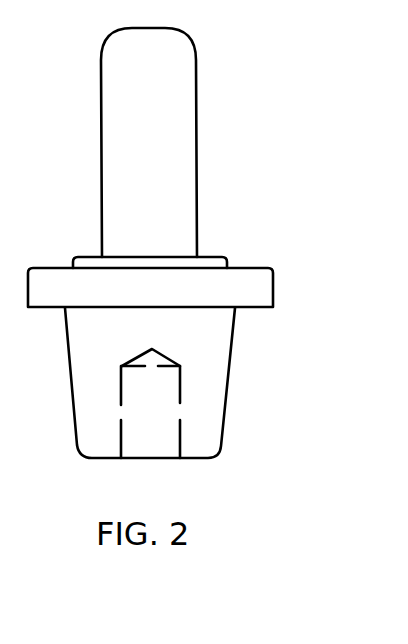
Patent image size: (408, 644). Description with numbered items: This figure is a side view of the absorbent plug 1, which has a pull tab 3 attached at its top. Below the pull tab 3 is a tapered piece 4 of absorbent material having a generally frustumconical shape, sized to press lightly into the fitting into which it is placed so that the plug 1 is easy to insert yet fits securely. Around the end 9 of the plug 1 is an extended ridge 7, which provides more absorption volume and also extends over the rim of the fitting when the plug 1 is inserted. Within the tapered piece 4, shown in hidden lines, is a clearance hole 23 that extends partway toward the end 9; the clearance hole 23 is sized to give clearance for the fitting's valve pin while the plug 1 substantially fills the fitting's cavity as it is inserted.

The absorbent plug 1 is at (310, 137).
The pull tab 3 is at (197, 137).
The end 9 is at (230, 267).
The extended ridge 7 is at (275, 278).
The tapered piece 4 is at (231, 383).
The clearance hole 23 is at (182, 437).